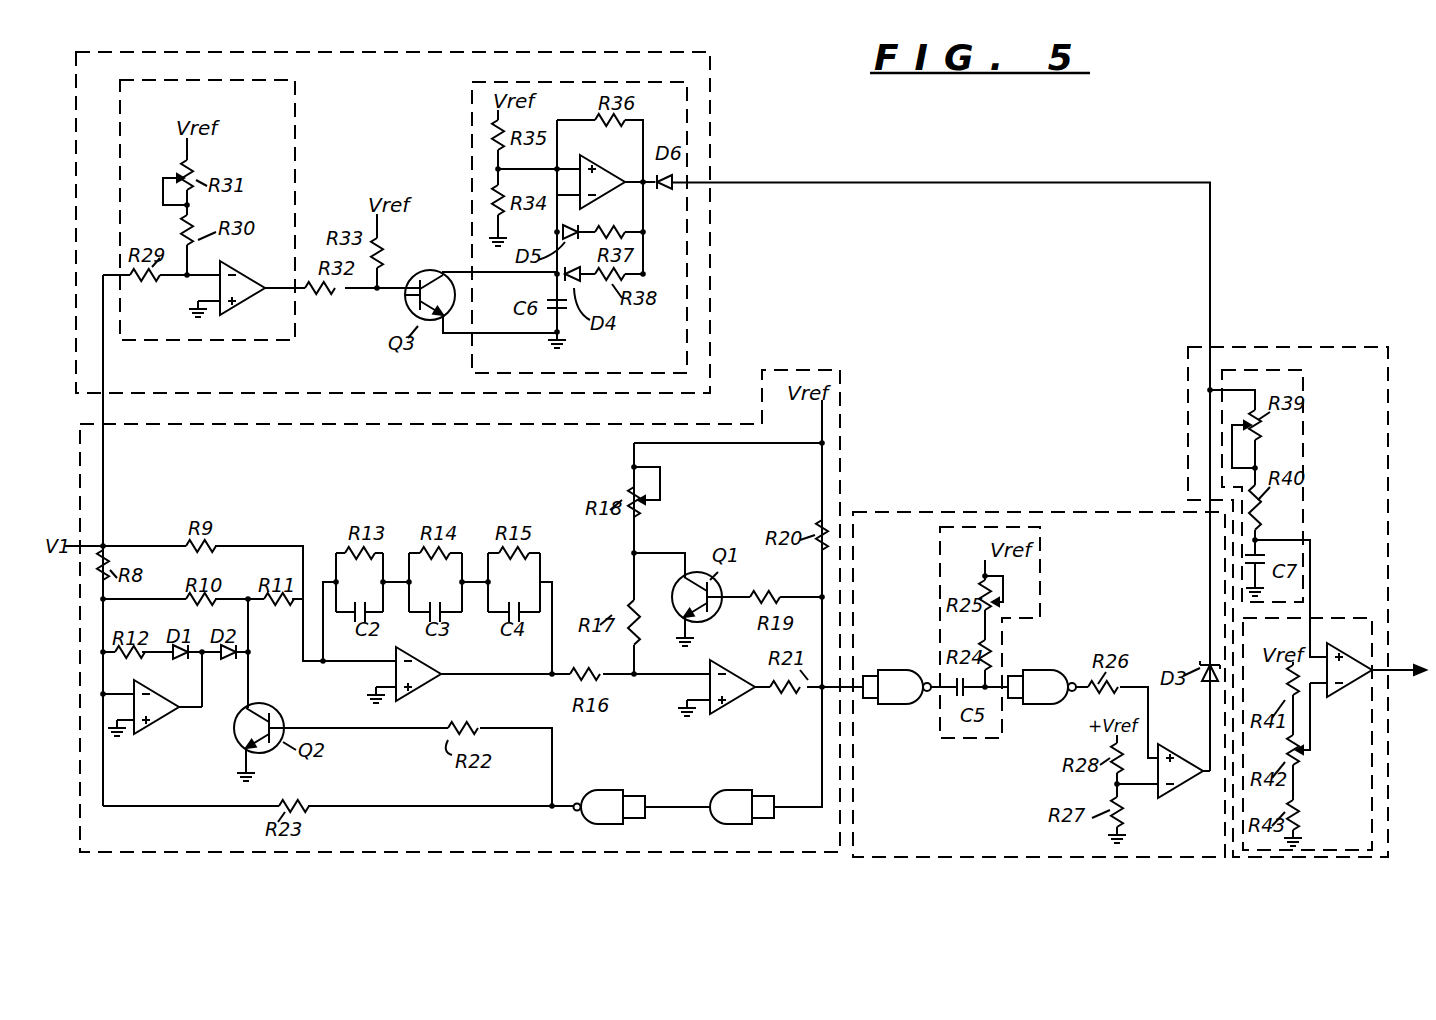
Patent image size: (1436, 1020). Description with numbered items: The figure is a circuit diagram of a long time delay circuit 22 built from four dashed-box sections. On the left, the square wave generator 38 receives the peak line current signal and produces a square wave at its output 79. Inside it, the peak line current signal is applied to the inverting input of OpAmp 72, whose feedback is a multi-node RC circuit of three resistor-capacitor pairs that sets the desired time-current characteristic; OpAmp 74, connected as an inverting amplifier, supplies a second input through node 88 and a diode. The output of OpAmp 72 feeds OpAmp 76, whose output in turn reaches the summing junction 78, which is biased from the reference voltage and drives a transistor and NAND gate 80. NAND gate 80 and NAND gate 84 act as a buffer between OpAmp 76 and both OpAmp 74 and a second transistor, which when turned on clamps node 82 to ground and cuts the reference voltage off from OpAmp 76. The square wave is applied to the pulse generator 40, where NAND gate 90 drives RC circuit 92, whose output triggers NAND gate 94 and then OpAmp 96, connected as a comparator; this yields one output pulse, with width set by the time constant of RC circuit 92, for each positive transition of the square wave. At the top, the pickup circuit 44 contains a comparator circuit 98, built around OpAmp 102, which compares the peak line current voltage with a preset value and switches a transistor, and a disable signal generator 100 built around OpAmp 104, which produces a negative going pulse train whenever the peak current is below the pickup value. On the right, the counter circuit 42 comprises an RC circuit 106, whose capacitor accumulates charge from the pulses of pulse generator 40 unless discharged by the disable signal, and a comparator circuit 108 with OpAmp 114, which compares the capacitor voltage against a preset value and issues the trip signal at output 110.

The long time delay circuit 22 is at (1238, 283).
The square wave generator 38 is at (840, 455).
The pulse generator 40 is at (1040, 512).
The counter circuit 42 is at (1320, 325).
The pickup circuit 44 is at (712, 130).
The operational amplifier 72 is at (440, 684).
The operational amplifier 74 is at (158, 726).
The operational amplifier 76 is at (732, 712).
The summing junction 78 is at (820, 700).
The output 79 is at (850, 687).
The NAND gate 80 is at (740, 790).
The node 82 is at (632, 554).
The NAND gate 84 is at (618, 778).
The node 88 is at (204, 660).
The NAND gate 90 is at (888, 712).
The RC circuit 92 is at (952, 740).
The NAND gate 94 is at (1035, 712).
The operational amplifier 96 is at (1180, 796).
The comparator circuit 98 is at (297, 143).
The disable signal generator 100 is at (472, 122).
The operational amplifier 102 is at (232, 310).
The operational amplifier 104 is at (622, 162).
The RC circuit 106 is at (1305, 420).
The comparator circuit 108 is at (1352, 603).
The output 110 is at (1395, 675).
The operational amplifier 114 is at (1358, 652).